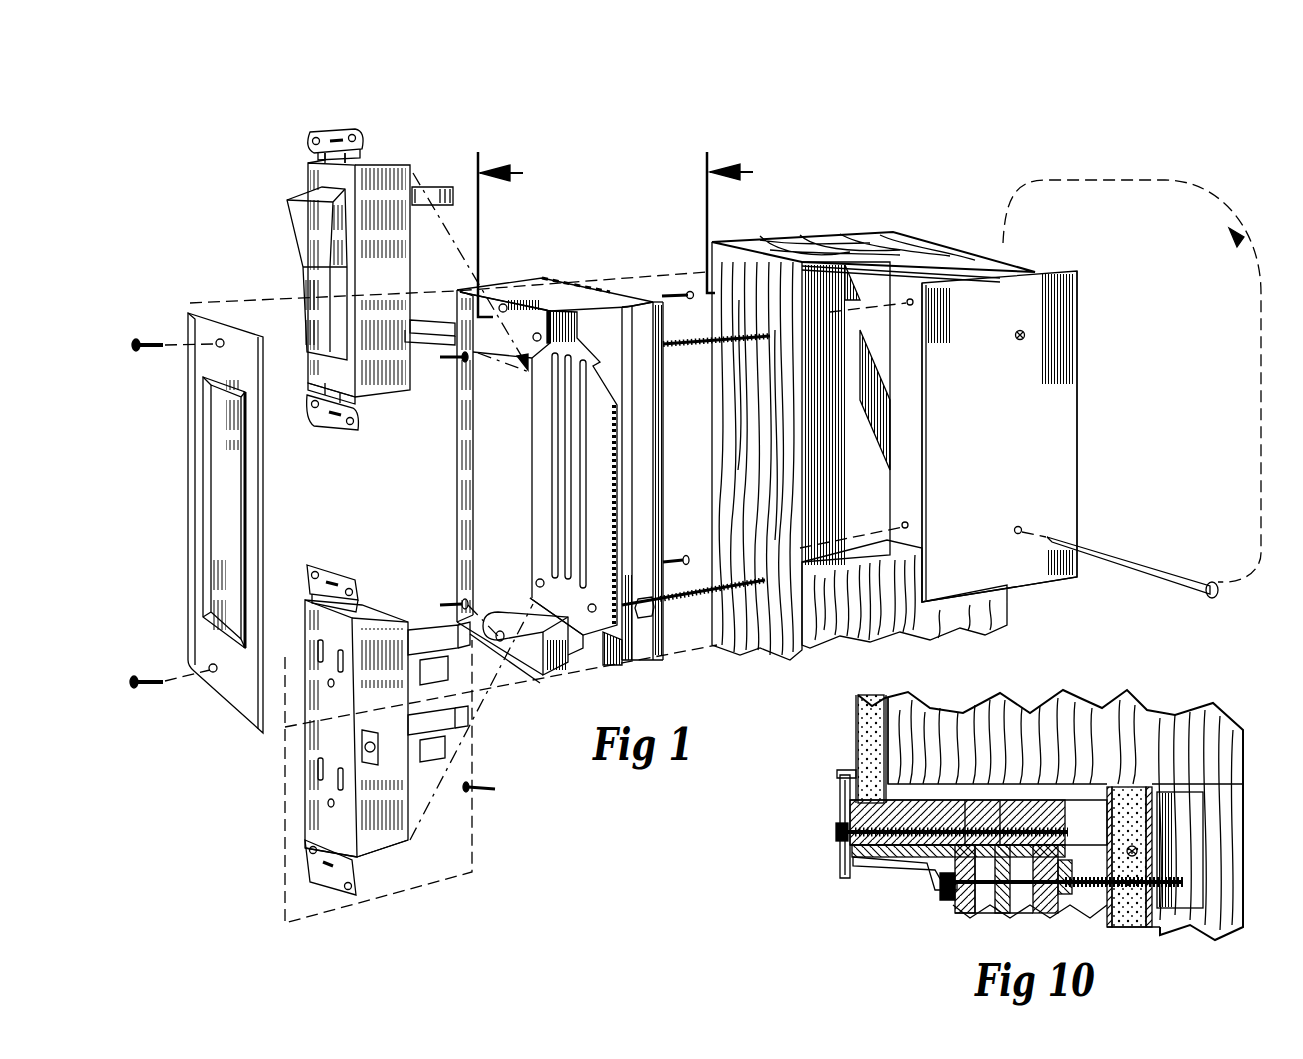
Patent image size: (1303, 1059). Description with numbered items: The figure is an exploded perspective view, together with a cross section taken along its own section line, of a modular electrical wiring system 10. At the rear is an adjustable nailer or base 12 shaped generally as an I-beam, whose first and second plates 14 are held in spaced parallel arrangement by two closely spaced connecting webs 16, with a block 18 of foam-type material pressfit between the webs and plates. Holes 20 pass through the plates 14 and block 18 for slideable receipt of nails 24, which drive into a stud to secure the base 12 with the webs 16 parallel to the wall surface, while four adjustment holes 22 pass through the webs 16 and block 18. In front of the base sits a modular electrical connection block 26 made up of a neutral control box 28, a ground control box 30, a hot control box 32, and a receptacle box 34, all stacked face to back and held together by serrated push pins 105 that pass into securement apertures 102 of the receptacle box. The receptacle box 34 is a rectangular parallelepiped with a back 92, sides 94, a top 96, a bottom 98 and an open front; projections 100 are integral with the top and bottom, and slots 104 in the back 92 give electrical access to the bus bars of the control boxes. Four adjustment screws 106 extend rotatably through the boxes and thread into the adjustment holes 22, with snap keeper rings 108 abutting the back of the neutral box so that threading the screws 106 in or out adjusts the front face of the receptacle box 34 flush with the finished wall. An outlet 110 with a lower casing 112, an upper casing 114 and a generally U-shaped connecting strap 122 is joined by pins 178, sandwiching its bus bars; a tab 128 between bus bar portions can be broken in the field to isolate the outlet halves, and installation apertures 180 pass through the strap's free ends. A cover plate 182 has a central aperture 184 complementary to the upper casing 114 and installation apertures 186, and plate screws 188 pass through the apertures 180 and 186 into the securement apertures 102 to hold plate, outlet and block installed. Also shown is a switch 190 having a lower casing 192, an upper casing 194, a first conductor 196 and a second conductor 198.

In FIG. 1, the modular electrical wiring system 10 is at (235, 198).
In FIG. 1, the base 12 is at (1078, 331).
In FIG. 1, the plates 14 is at (1062, 420).
In FIG. 1, the connecting webs 16 is at (968, 262).
In FIG. 10, the connecting webs 16 is at (1100, 799).
In FIG. 1, the block 18 is at (1015, 272).
In FIG. 10, the block 18 is at (1130, 795).
In FIG. 1, the holes 20 is at (1014, 530).
In FIG. 1, the adjustment holes 22 is at (906, 306).
In FIG. 10, the adjustment holes 22 is at (1112, 900).
In FIG. 1, the nails 24 is at (1015, 336).
In FIG. 10, the nails 24 is at (1140, 852).
In FIG. 1, the modular electrical connection block 26 is at (454, 483).
In FIG. 10, the modular electrical connection block 26 is at (923, 796).
In FIG. 1, the neutral control box 28 is at (664, 410).
In FIG. 10, the neutral control box 28 is at (1048, 916).
In FIG. 1, the ground control box 30 is at (653, 437).
In FIG. 10, the ground control box 30 is at (1002, 916).
In FIG. 1, the hot control box 32 is at (632, 463).
In FIG. 10, the hot control box 32 is at (965, 916).
In FIG. 1, the receptacle box 34 is at (560, 680).
In FIG. 10, the receptacle box 34 is at (945, 800).
In FIG. 1, the back 92 is at (535, 412).
In FIG. 1, the sides 94 is at (590, 345).
In FIG. 1, the top 96 is at (512, 290).
In FIG. 1, the bottom 98 is at (521, 672).
In FIG. 1, the projections 100 is at (493, 353).
In FIG. 1, the securement apertures 102 is at (470, 622).
In FIG. 10, the securement apertures 102 is at (910, 800).
In FIG. 1, the slots 104 is at (578, 511).
In FIG. 1, the push pins 105 is at (678, 292).
In FIG. 10, the push pins 105 is at (1087, 857).
In FIG. 1, the adjustment screws 106 is at (700, 342).
In FIG. 10, the adjustment screws 106 is at (945, 890).
In FIG. 1, the snap keeper rings 108 is at (654, 607).
In FIG. 10, the snap keeper rings 108 is at (1068, 880).
In FIG. 1, the outlet 110 is at (306, 776).
In FIG. 1, the lower casing 112 is at (406, 838).
In FIG. 1, the upper casing 114 is at (368, 858).
In FIG. 1, the connecting strap 122 is at (346, 422).
In FIG. 10, the connecting strap 122 is at (852, 862).
In FIG. 1, the tab 128 is at (362, 745).
In FIG. 1, the pins 178 is at (497, 788).
In FIG. 1, the installation apertures 180 is at (328, 137).
In FIG. 1, the cover plate 182 is at (190, 316).
In FIG. 10, the cover plate 182 is at (832, 797).
In FIG. 1, the central aperture 184 is at (215, 483).
In FIG. 1, the installation apertures 186 is at (216, 348).
In FIG. 10, the installation apertures 186 is at (838, 830).
In FIG. 1, the plate screws 188 is at (133, 338).
In FIG. 10, the plate screws 188 is at (835, 840).
In FIG. 1, the switch 190 is at (307, 178).
In FIG. 1, the lower casing 192 is at (382, 167).
In FIG. 1, the upper casing 194 is at (365, 390).
In FIG. 1, the first conductor 196 is at (455, 198).
In FIG. 1, the second conductor 198 is at (437, 325).